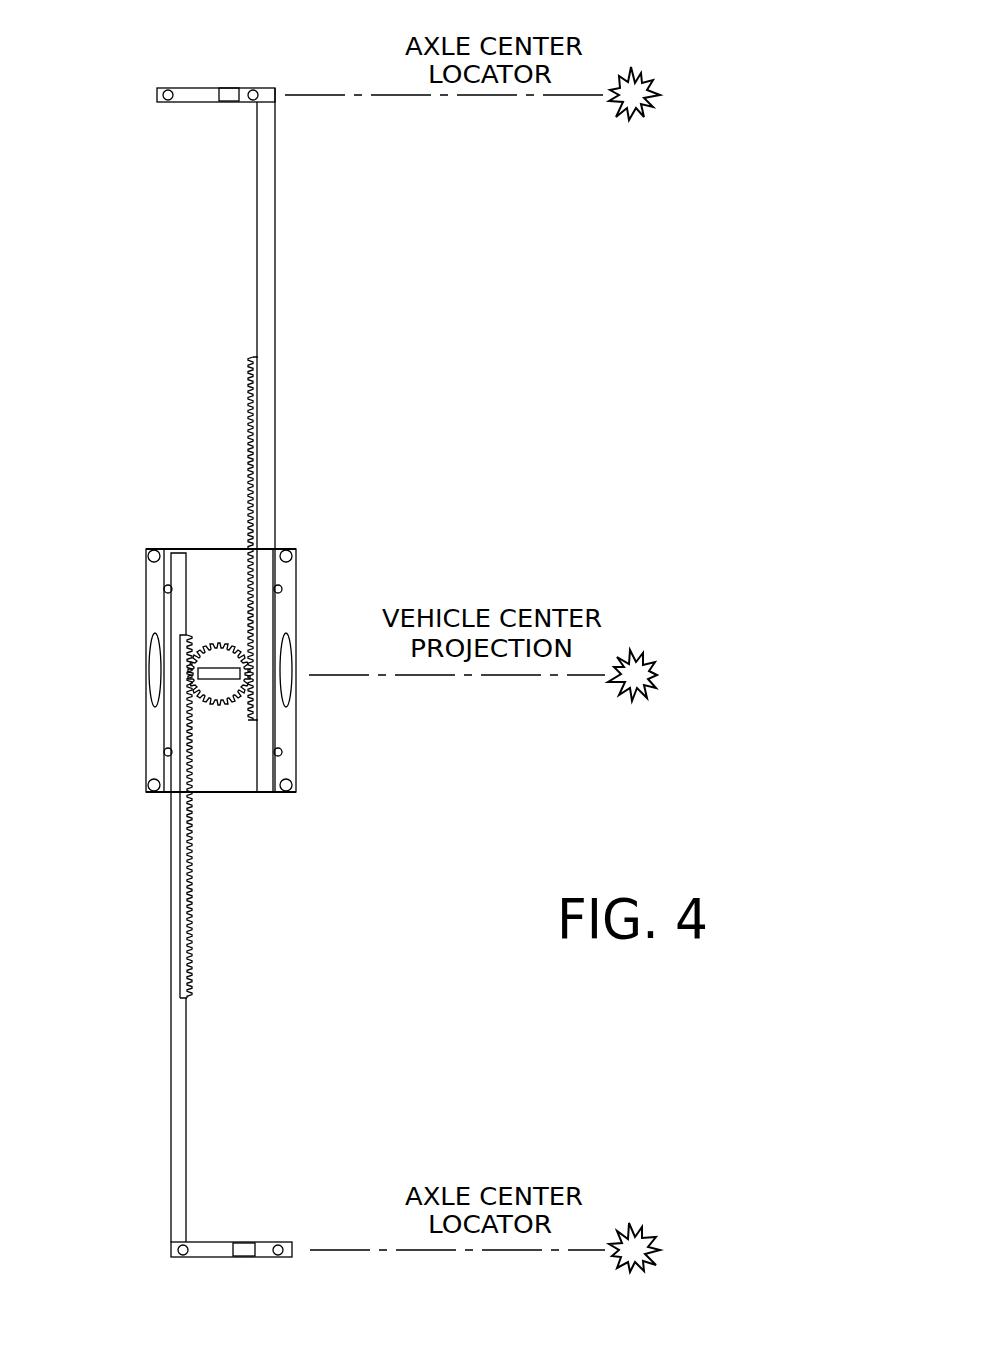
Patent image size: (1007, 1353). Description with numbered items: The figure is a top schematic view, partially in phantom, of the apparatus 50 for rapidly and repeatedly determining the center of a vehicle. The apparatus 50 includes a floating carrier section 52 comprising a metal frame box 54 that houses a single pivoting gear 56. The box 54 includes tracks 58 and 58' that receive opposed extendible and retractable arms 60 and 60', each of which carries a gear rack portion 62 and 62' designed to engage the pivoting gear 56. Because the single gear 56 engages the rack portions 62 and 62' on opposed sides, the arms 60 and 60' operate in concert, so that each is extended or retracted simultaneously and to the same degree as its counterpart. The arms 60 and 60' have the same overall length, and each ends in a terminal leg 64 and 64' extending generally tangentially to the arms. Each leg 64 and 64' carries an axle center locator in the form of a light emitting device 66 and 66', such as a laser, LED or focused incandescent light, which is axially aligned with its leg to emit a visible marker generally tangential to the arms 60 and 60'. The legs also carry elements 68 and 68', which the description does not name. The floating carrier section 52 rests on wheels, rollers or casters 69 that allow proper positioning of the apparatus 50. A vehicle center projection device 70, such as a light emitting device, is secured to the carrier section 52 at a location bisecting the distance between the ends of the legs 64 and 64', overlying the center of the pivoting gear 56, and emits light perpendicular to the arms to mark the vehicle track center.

The apparatus 50 is at (158, 500).
The floating carrier section 52 is at (297, 573).
The metal frame box 54 is at (155, 730).
The pivoting gear 56 is at (205, 645).
The track 58 is at (122, 653).
The track 58' is at (328, 689).
The arm 60 is at (129, 897).
The arm 60' is at (306, 440).
The gear rack portion 62 is at (218, 816).
The gear rack portion 62' is at (218, 538).
The terminal leg 64 is at (231, 1209).
The terminal leg 64' is at (187, 125).
The light emitting device 66 is at (277, 1209).
The light emitting device 66' is at (209, 125).
The lower locator pins 68 is at (203, 1294).
The upper locator pins 68' is at (183, 55).
The casters 69 is at (152, 549).
The vehicle center projection device 70 is at (218, 673).